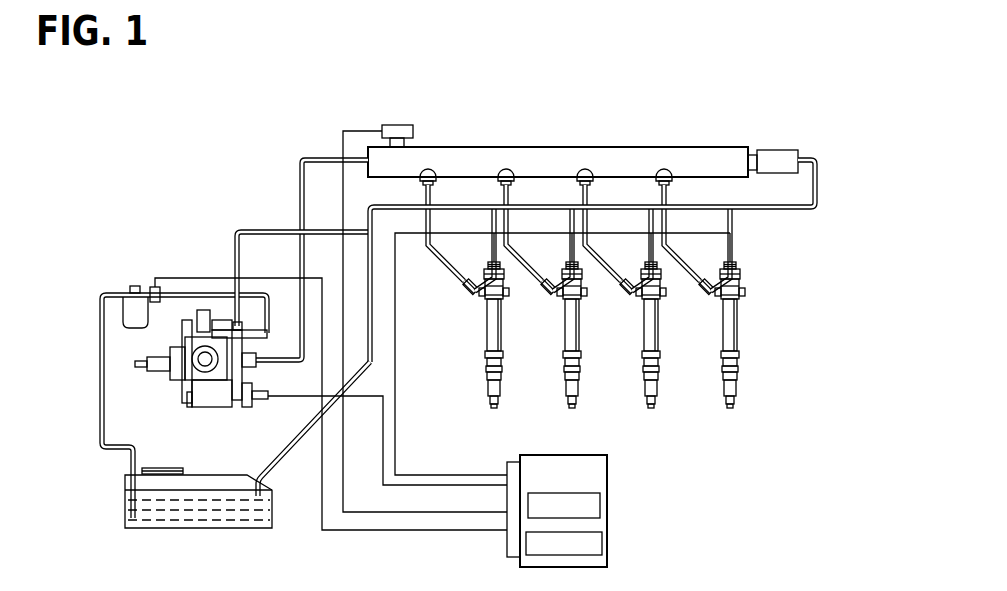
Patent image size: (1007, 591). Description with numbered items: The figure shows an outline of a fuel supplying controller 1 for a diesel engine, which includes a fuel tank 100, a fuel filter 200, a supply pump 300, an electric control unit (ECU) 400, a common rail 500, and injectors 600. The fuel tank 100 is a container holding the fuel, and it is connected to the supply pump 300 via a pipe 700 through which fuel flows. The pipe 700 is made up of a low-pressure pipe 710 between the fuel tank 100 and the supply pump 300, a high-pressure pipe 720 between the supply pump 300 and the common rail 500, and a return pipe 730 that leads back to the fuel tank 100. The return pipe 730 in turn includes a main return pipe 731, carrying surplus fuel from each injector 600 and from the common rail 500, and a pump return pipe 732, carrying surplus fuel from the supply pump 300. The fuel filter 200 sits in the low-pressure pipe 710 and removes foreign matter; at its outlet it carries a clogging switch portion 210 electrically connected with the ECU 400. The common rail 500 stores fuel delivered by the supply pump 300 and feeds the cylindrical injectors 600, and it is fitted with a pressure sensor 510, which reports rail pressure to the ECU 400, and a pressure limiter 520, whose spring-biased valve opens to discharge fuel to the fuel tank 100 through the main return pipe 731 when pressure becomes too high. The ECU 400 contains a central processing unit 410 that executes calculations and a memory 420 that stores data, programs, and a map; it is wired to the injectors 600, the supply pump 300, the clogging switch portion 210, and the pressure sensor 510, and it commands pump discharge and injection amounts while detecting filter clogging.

The fuel supplying controller 1 is at (306, 130).
The fuel tank 100 is at (163, 500).
The fuel filter 200 is at (123, 300).
The clogging switch portion 210 is at (153, 287).
The supply pump 300 is at (205, 328).
The electric control unit (ECU) 400 is at (607, 473).
The central processing unit (CPU) 410 is at (600, 503).
The memory 420 is at (602, 543).
The common rail 500 is at (630, 148).
The pressure sensor 510 is at (411, 126).
The pressure limiter 520 is at (786, 151).
The injector 600 is at (505, 378).
The pipe 700 is at (94, 448).
The low-pressure pipe 710 is at (99, 362).
The high-pressure pipe 720 is at (299, 161).
The return pipe 730 is at (283, 462).
The main return pipe 731 is at (798, 212).
The pump return pipe 732 is at (236, 232).